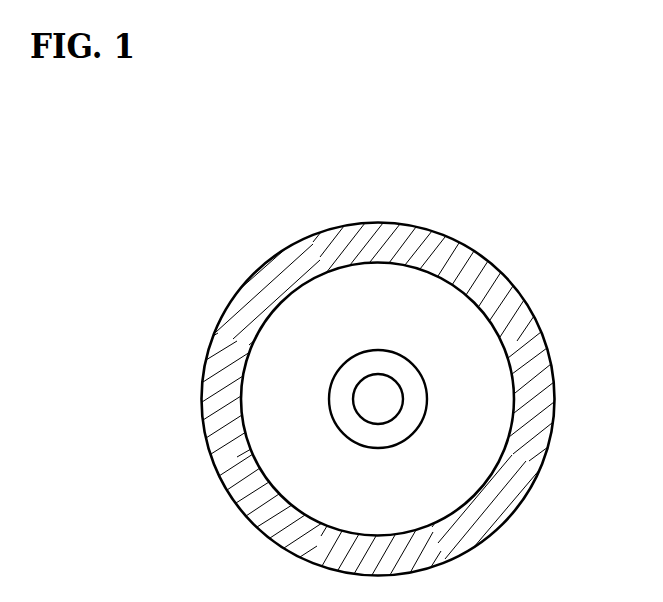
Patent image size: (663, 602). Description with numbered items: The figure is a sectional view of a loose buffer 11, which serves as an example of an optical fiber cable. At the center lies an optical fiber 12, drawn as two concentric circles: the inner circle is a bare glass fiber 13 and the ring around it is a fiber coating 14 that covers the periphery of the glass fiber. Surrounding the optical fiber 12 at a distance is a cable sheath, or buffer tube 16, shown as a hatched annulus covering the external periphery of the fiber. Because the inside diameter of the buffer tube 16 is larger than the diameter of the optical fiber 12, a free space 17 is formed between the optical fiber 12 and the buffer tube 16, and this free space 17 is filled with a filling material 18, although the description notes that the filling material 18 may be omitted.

The loose buffer 11 is at (478, 178).
The optical fiber 12 is at (335, 360).
The bare glass fiber 13 is at (394, 381).
The fiber coating 14 is at (417, 406).
The cable sheath (buffer tube) 16 is at (512, 305).
The free space 17 is at (385, 297).
The filling material 18 is at (442, 307).